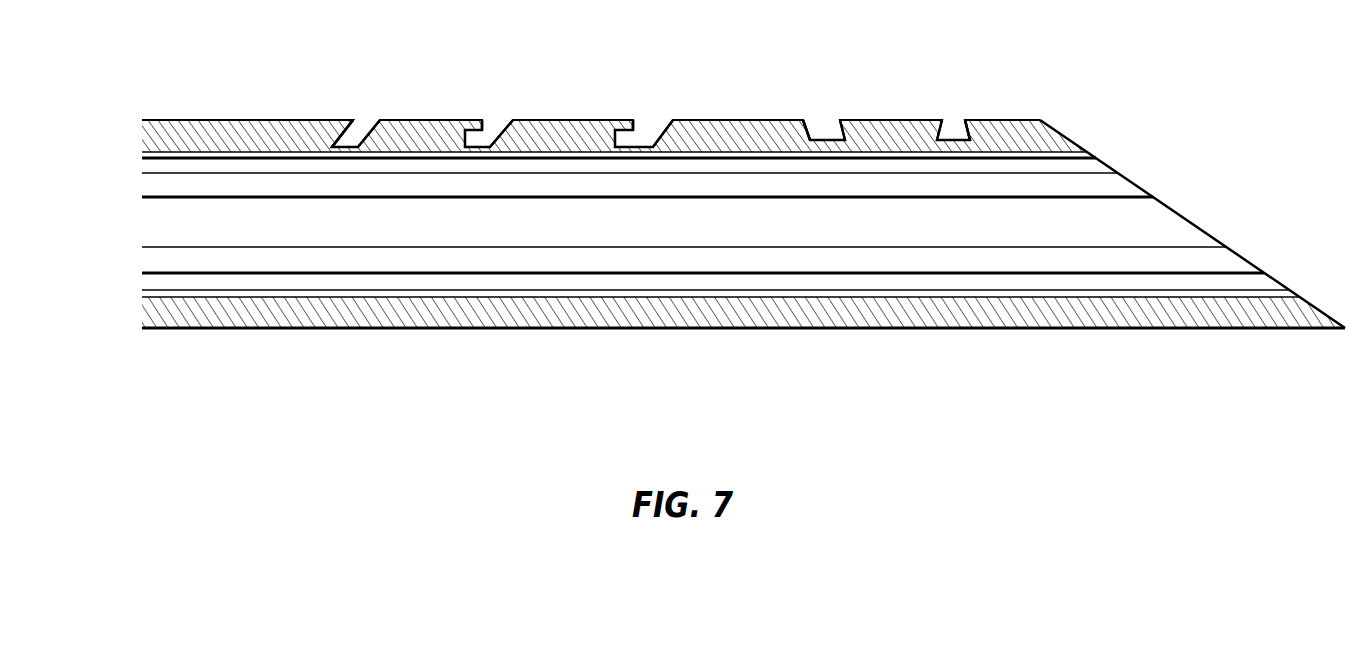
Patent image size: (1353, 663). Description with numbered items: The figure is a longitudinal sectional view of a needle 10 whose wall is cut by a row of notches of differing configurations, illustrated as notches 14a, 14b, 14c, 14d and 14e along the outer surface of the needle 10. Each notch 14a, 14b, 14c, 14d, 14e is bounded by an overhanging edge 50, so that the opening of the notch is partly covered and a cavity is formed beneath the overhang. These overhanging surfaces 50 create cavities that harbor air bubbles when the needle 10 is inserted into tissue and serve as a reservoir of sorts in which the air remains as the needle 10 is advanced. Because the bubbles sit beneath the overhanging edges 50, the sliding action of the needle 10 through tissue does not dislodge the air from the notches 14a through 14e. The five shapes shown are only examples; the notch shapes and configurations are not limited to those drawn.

The needle 10 is at (342, 328).
The notch 14a is at (352, 112).
The notch 14b is at (485, 112).
The notch 14c is at (640, 112).
The notch 14d is at (803, 112).
The notch 14e is at (953, 118).
The overhanging edge 50 is at (353, 122).